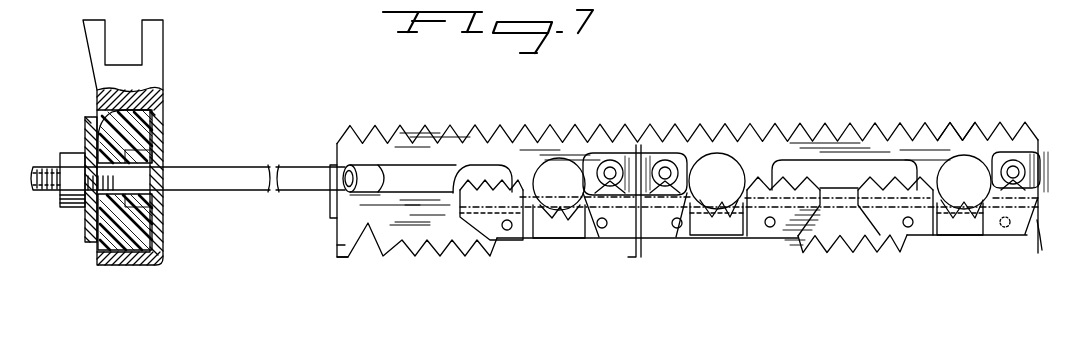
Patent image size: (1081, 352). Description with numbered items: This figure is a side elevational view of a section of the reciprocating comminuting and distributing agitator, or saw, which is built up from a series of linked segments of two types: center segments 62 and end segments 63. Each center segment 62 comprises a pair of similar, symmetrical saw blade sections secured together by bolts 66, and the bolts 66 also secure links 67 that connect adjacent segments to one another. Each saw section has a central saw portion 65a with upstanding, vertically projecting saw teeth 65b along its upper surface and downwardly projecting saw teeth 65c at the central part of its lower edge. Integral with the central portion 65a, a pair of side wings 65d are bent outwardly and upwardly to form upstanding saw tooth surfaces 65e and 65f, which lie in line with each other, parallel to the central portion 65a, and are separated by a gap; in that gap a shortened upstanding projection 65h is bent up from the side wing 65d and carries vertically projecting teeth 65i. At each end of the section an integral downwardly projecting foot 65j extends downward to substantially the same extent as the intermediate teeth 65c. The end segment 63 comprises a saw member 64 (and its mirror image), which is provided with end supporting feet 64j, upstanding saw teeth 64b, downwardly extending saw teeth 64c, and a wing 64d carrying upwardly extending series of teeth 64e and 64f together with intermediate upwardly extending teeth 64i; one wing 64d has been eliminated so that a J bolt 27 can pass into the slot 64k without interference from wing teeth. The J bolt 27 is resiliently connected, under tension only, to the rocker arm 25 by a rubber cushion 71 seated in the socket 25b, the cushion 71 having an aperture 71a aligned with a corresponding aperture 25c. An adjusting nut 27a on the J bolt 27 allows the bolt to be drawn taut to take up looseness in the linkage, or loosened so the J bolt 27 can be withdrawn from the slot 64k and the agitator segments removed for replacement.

The rocker arm 25 is at (150, 70).
The socket 25b is at (130, 262).
The aperture 25c is at (158, 210).
The J bolt 27 is at (222, 180).
The adjusting nut 27a is at (70, 210).
The center segment 62 is at (951, 122).
The end segment 63 is at (427, 138).
The saw member 64 is at (383, 203).
The upstanding saw teeth 64b is at (462, 137).
The downwardly extending saw teeth 64c is at (427, 252).
The wing 64d is at (522, 222).
The upwardly extending teeth 64e is at (597, 200).
The upwardly extending teeth 64f is at (515, 187).
The intermediate upwardly extending teeth 64i is at (557, 228).
The end supporting feet 64j is at (342, 247).
The slot 64k is at (460, 186).
The central saw portion 65a is at (837, 168).
The saw teeth 65b is at (694, 172).
The downwardly projecting saw teeth 65c is at (697, 160).
The side wing 65d is at (928, 225).
The saw tooth surface 65e is at (1047, 200).
The saw tooth surface 65f is at (757, 190).
The upstanding projection 65h is at (712, 225).
The vertically projecting teeth 65i is at (728, 212).
The foot 65j is at (672, 230).
The bolt 66 is at (672, 164).
The link 67 is at (663, 160).
The rubber cushion 71 is at (150, 135).
The aperture 71a is at (100, 170).